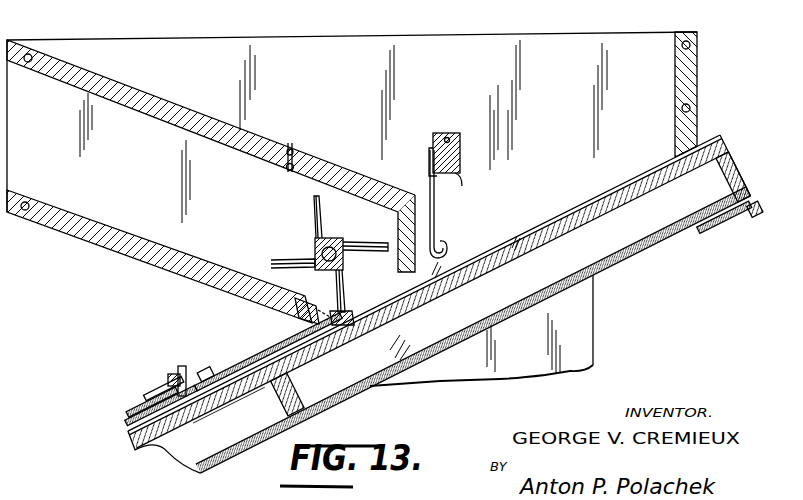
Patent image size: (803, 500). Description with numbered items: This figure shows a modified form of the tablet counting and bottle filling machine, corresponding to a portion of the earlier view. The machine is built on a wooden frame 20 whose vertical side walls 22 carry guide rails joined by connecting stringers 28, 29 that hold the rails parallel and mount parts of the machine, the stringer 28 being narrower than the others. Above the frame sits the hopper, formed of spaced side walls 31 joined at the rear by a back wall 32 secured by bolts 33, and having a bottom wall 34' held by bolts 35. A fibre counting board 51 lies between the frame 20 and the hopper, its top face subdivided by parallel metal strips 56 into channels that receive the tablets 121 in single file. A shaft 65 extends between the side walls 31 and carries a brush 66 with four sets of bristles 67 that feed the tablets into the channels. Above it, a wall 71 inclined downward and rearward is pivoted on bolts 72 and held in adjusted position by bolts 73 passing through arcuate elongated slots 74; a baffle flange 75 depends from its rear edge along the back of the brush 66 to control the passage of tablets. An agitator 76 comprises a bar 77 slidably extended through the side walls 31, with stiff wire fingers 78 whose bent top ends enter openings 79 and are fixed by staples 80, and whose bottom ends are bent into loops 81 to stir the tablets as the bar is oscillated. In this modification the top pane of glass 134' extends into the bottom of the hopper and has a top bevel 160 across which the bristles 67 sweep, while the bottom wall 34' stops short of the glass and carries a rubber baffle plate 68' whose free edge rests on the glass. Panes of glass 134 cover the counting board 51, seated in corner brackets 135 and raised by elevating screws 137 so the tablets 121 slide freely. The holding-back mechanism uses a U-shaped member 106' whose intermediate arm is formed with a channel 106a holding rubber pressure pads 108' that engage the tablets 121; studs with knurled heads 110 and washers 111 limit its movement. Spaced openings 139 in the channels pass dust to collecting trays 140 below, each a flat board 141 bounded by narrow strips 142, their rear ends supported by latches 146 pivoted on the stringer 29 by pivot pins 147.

The frame 20 is at (604, 334).
The vertical side walls 22 is at (578, 353).
The stringer 28 is at (283, 400).
The stringer 29 is at (717, 188).
The side walls 31 is at (568, 40).
The back wall 32 is at (676, 66).
The bolts 33 is at (675, 45).
The bottom wall 34' is at (159, 256).
The bolts 35 is at (28, 200).
The counting board 51 is at (620, 203).
The metal strips 56 is at (552, 218).
The shaft 65 is at (344, 258).
The brush 66 is at (323, 238).
The bristles 67 is at (316, 210).
The baffle plate 68' is at (318, 291).
The wall 71 is at (163, 105).
The bolts 72 is at (44, 60).
The bolts 73 is at (278, 170).
The elongated slots 74 is at (290, 148).
The baffle flange 75 is at (400, 232).
The agitator 76 is at (458, 130).
The bar 77 is at (462, 172).
The fingers 78 is at (436, 211).
The openings 79 is at (447, 134).
The staples 80 is at (432, 162).
The loops 81 is at (447, 250).
The U-shaped member 106' is at (134, 402).
The channel 106a is at (170, 383).
The pressure pads 108' is at (235, 419).
The knurled heads 110 is at (181, 368).
The washers 111 is at (165, 395).
The tablets 121 is at (160, 447).
The panes of glass 134 is at (137, 412).
The top pane of glass 134' is at (262, 341).
The corner brackets 135 is at (210, 380).
The elevating screws 137 is at (340, 345).
The openings 139 is at (498, 272).
The collecting trays 140 is at (550, 303).
The flat board 141 is at (612, 270).
The narrow strips 142 is at (585, 270).
The latches 146 is at (708, 236).
The pivot pins 147 is at (742, 226).
The top bevel 160 is at (347, 312).